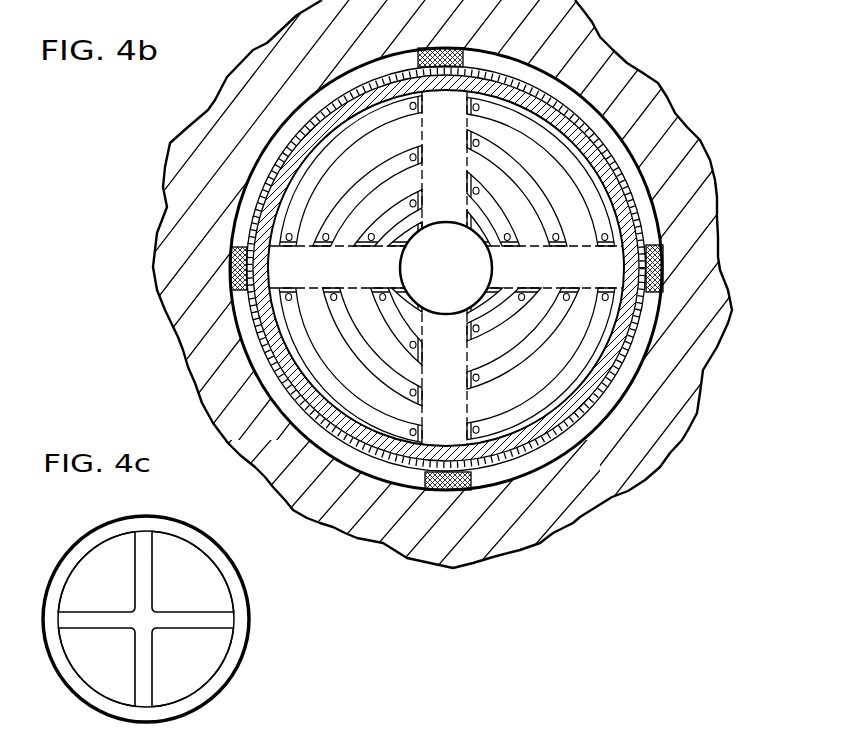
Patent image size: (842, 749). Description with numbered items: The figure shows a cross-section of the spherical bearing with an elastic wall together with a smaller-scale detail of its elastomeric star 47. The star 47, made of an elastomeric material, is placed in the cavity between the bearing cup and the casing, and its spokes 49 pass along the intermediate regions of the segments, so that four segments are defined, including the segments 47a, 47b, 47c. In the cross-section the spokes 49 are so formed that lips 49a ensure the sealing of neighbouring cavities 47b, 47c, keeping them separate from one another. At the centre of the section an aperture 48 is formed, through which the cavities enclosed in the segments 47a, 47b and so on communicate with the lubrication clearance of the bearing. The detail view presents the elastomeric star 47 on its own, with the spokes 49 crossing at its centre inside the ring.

In FIG. 4b, the segment 47a is at (596, 124).
In FIG. 4b, the segment cavity 47b is at (603, 418).
In FIG. 4b, the segment cavity 47c is at (370, 468).
In FIG. 4b, the aperture 48 is at (472, 236).
In FIG. 4b, the lip 49a is at (476, 488).
In FIG. 4c, the star 47 is at (227, 688).
In FIG. 4c, the spoke 49 is at (203, 622).